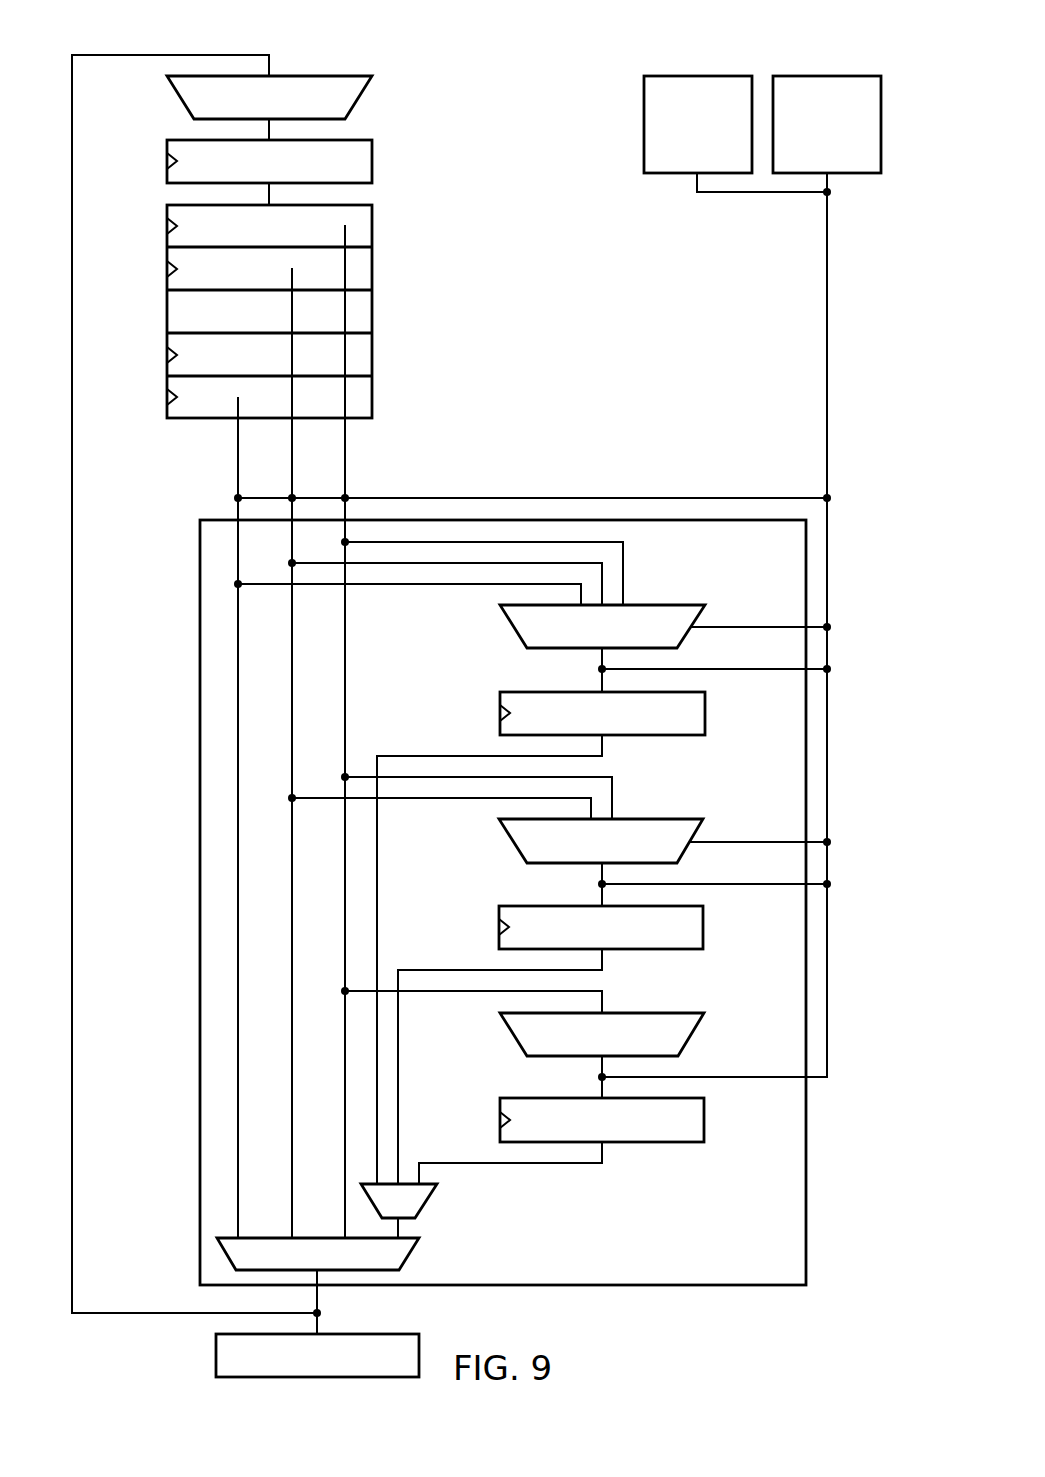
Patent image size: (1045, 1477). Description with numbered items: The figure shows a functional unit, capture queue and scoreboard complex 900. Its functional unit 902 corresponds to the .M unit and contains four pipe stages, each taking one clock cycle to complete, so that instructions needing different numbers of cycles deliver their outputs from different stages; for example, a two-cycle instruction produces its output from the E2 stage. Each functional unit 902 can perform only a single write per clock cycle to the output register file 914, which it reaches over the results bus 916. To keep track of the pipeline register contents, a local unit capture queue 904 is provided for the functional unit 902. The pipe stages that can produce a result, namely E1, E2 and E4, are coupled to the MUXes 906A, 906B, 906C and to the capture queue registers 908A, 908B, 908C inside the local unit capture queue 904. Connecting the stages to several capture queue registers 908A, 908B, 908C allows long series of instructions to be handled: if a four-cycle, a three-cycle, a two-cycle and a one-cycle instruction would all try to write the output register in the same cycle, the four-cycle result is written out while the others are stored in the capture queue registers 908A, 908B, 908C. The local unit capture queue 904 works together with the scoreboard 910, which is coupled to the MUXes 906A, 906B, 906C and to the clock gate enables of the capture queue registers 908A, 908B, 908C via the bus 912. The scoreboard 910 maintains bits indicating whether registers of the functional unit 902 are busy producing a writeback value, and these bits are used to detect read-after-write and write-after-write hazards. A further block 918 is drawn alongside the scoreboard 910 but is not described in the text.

The functional unit, capture queue and scoreboard complex 900 is at (580, 62).
The functional unit 902 is at (380, 262).
The local unit capture queue 904 is at (194, 676).
The MUX 906A is at (656, 603).
The MUX 906B is at (656, 817).
The MUX 906C is at (656, 1011).
The capture queue register 908A is at (705, 712).
The capture queue register 908B is at (703, 925).
The capture queue register 908C is at (704, 1120).
The scoreboard 910 is at (827, 124).
The bus 912 is at (826, 348).
The output register file 914 is at (215, 1355).
The results bus 916 is at (320, 1295).
The clock/control unit 918 is at (698, 124).